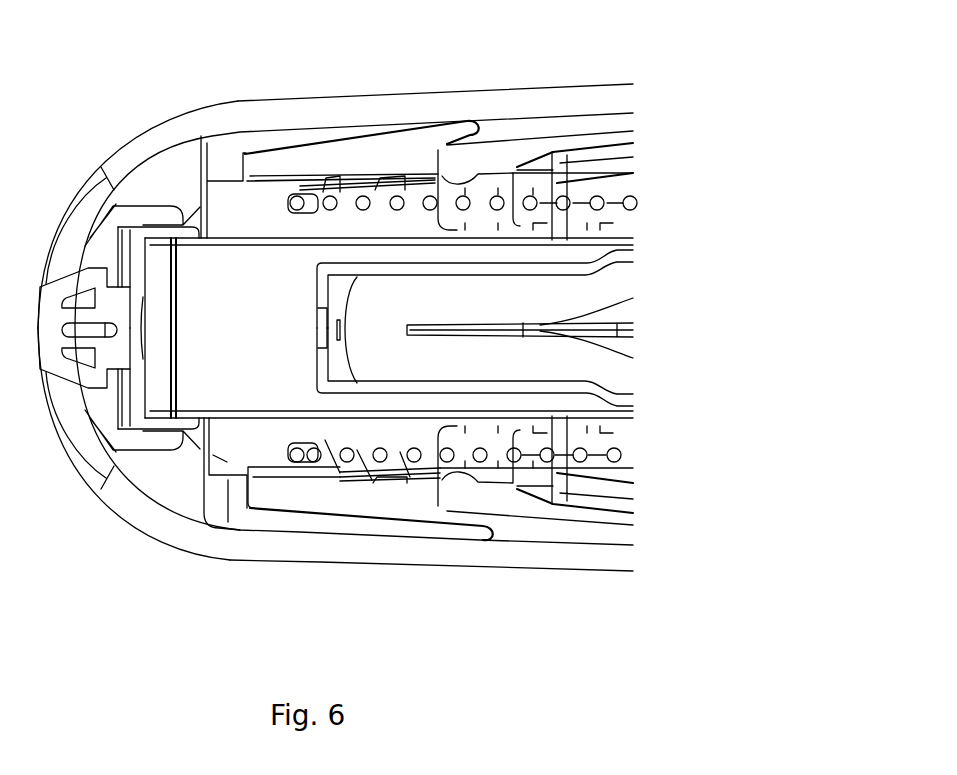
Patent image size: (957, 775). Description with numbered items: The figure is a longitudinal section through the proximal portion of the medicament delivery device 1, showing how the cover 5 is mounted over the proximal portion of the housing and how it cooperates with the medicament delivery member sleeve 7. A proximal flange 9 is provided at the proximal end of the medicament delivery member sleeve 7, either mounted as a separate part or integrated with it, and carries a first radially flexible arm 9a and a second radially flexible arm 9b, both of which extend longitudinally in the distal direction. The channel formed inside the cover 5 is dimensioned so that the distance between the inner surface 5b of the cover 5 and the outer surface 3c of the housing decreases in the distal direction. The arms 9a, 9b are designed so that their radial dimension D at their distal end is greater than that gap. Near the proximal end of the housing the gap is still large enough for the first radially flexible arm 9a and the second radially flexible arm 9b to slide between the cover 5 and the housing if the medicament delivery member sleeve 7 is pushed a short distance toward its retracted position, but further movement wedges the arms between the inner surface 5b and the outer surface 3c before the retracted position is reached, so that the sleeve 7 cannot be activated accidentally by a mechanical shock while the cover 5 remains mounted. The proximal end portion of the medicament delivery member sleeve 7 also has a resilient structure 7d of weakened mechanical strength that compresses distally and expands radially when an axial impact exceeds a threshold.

The medicament delivery device 1 is at (52, 127).
The cover 5 is at (500, 88).
The inner surface of the cover 5b is at (553, 115).
The proximal flange 9 is at (226, 160).
The first radially flexible arm 9a is at (372, 130).
The second radially flexible arm 9b is at (328, 528).
The resilient structure 7d is at (372, 168).
The medicament delivery member sleeve 7 is at (277, 480).
The outer surface of the housing 3c is at (600, 128).
The radial dimension D is at (447, 150).